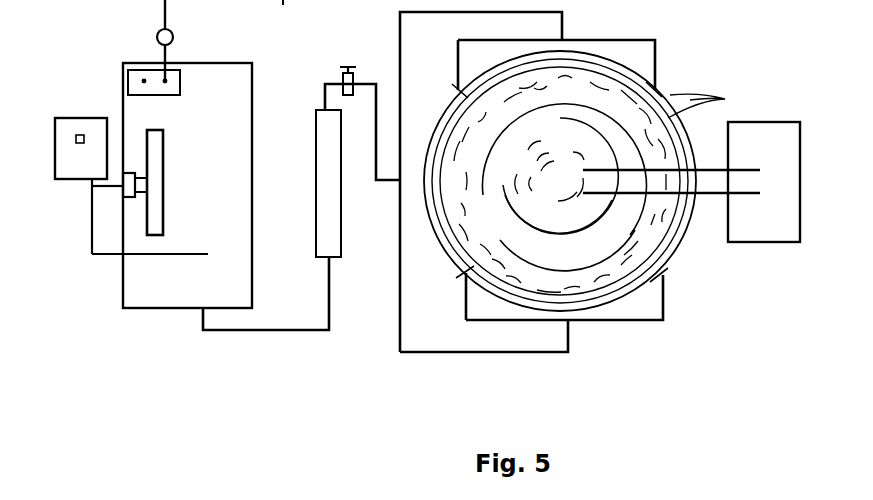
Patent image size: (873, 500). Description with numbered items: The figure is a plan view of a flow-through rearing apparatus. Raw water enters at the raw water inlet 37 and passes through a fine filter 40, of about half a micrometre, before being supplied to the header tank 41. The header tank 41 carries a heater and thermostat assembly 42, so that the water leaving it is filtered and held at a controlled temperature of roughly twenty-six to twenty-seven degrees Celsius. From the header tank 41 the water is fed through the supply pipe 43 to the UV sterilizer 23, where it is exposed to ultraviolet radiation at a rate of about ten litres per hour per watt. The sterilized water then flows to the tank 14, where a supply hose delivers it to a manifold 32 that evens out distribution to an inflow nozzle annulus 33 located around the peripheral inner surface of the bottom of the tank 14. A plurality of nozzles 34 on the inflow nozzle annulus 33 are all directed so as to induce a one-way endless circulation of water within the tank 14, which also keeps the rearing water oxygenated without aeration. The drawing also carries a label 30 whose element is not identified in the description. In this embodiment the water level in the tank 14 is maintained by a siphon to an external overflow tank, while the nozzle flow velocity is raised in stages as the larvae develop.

The tank 14 is at (452, 250).
The UV sterilizer 23 is at (320, 141).
The inner basket 30 is at (612, 215).
The manifold 32 is at (400, 278).
The inflow nozzle annulus 33 is at (281, 18).
The nozzles 34 is at (702, 162).
The raw water inlet 37 is at (163, 9).
The filter 40 is at (157, 38).
The header tank 41 is at (128, 310).
The heater and thermostat assembly 42 is at (120, 190).
The supply pipe 43 is at (255, 334).